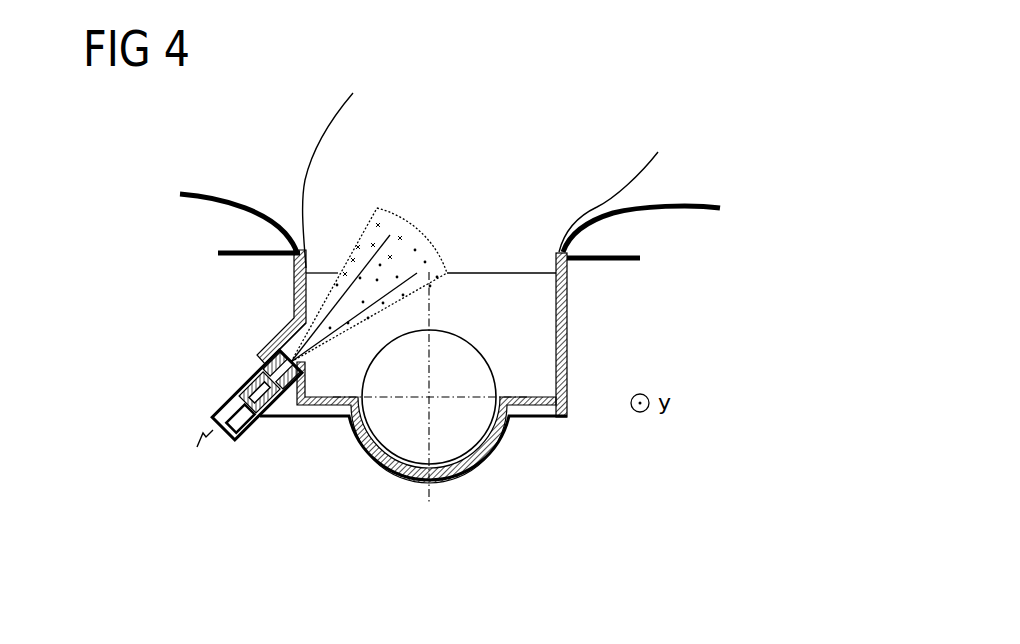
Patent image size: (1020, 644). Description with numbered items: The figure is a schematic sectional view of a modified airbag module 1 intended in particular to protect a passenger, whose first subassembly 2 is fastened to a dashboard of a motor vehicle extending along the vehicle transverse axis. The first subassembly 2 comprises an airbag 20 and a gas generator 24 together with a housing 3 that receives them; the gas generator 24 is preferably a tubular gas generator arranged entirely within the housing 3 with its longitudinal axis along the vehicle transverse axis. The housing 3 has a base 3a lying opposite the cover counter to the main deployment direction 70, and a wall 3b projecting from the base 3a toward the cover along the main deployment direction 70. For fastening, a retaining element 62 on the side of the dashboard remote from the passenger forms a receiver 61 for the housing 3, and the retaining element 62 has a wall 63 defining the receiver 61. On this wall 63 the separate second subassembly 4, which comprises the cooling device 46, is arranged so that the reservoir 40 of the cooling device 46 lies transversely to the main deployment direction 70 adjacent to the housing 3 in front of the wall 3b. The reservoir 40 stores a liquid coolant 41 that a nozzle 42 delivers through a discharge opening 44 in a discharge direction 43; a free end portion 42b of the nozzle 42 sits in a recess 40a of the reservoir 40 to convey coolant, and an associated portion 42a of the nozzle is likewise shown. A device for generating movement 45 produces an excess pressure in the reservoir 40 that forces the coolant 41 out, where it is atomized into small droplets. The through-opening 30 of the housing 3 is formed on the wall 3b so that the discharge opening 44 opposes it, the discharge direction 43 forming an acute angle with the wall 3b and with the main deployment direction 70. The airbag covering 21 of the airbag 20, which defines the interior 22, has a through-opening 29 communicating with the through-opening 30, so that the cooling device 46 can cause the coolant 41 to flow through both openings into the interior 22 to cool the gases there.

The airbag module 1 is at (178, 258).
The first subassembly 2 is at (437, 389).
The housing 3 is at (554, 330).
The base 3a is at (329, 419).
The wall 3b is at (294, 293).
The second subassembly 4 is at (241, 452).
The airbag 20 is at (302, 124).
The airbag covering 21 is at (345, 102).
The interior 22 is at (486, 200).
The gas generator 24 is at (457, 442).
The through-opening 29 is at (291, 362).
The through-opening 30 is at (294, 330).
The reservoir 40 is at (209, 437).
The recess 40a is at (240, 418).
The coolant 41 is at (379, 212).
The nozzle 42 is at (269, 383).
The front insert part 42a is at (281, 370).
The free end portion 42b is at (259, 392).
The discharge direction 43 is at (468, 182).
The discharge opening 44 is at (305, 363).
The device for generating movement 45 is at (223, 440).
The cooling device 46 is at (200, 417).
The receiver 61 is at (536, 422).
The retaining element 62 is at (304, 409).
The wall 63 is at (568, 310).
The main deployment direction 70 is at (430, 197).